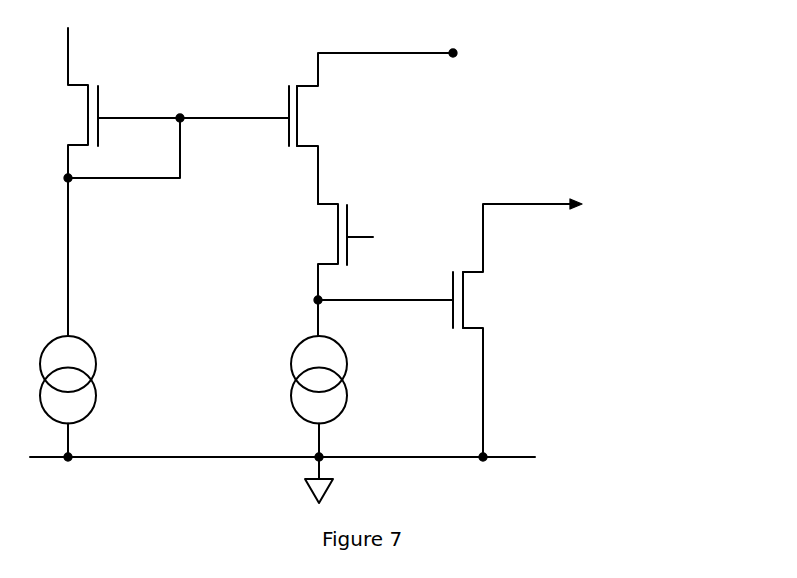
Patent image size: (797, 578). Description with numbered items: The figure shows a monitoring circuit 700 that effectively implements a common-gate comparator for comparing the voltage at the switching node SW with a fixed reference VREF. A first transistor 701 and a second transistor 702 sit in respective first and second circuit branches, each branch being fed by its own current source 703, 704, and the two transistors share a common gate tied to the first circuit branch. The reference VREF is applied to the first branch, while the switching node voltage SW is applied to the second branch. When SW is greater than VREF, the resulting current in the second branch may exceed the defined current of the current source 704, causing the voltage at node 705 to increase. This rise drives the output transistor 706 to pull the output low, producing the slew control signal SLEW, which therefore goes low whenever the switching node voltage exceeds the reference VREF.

The monitoring circuit 700 is at (624, 64).
The transistor 701 is at (98, 100).
The transistor 702 is at (288, 88).
The current source 703 is at (88, 342).
The current source 704 is at (295, 362).
The node 705 is at (315, 298).
The output transistor 706 is at (452, 332).